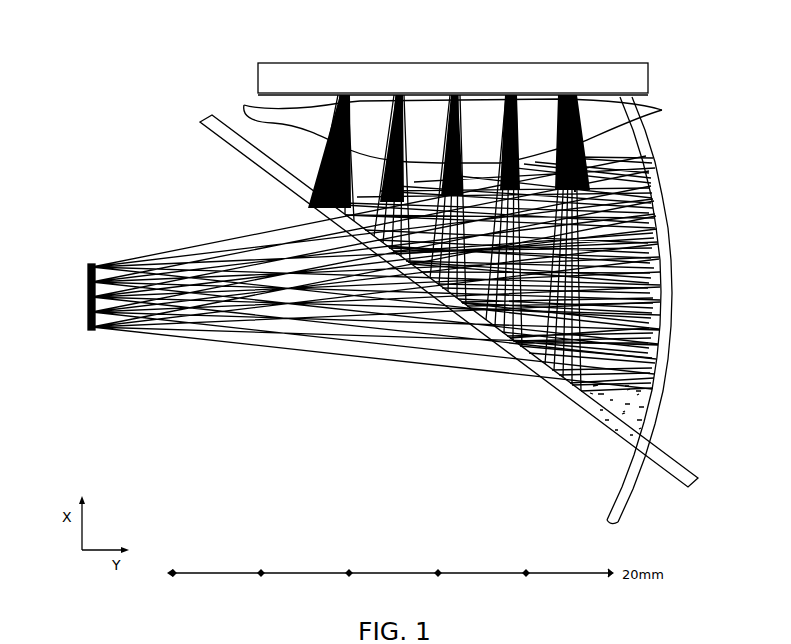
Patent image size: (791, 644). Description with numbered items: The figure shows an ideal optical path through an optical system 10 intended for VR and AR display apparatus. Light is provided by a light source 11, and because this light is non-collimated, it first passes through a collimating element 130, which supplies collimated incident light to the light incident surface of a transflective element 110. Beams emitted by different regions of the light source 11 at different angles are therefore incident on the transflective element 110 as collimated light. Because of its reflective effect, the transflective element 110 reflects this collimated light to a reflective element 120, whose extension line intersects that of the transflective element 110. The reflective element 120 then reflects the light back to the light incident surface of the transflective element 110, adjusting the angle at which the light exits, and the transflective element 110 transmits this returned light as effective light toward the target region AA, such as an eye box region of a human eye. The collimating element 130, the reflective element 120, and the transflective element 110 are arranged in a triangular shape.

The optical system 10 is at (83, 39).
The light source 11 is at (480, 78).
The transflective element 110 is at (253, 146).
The reflective element 120 is at (662, 180).
The collimating element 130 is at (662, 111).